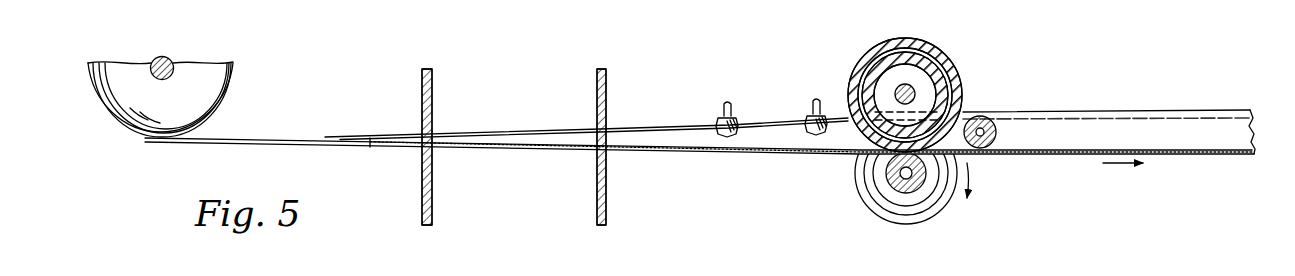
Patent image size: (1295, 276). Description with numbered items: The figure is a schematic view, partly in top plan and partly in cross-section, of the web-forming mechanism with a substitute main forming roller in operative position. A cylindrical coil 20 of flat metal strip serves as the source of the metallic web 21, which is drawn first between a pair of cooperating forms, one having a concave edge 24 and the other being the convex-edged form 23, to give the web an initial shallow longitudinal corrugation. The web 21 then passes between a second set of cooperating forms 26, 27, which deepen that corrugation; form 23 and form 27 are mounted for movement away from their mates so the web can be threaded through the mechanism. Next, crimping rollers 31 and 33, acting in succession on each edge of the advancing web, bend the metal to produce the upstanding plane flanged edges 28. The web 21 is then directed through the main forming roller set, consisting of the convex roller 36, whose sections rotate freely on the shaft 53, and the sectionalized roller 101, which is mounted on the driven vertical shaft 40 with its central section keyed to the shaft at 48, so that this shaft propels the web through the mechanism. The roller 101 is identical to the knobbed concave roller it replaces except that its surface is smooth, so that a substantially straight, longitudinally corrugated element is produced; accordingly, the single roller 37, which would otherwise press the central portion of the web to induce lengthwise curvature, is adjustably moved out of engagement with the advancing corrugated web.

The cylindrical coil of flat metal strip 20 is at (217, 79).
The web 21 is at (305, 138).
The cooperating form 23 is at (422, 83).
The concave edge 24 is at (422, 202).
The cooperating form 26 is at (597, 202).
The cooperating form 27 is at (597, 87).
The flanged edges 28 is at (838, 116).
The crimping roller 31 is at (716, 132).
The crimping roller 33 is at (806, 131).
The convex roller 36 is at (942, 46).
The single roller 37 is at (993, 121).
The shaft 40 is at (890, 171).
The key 48 is at (915, 193).
The shaft 53 is at (909, 87).
The sectionalized roller 101 is at (873, 217).